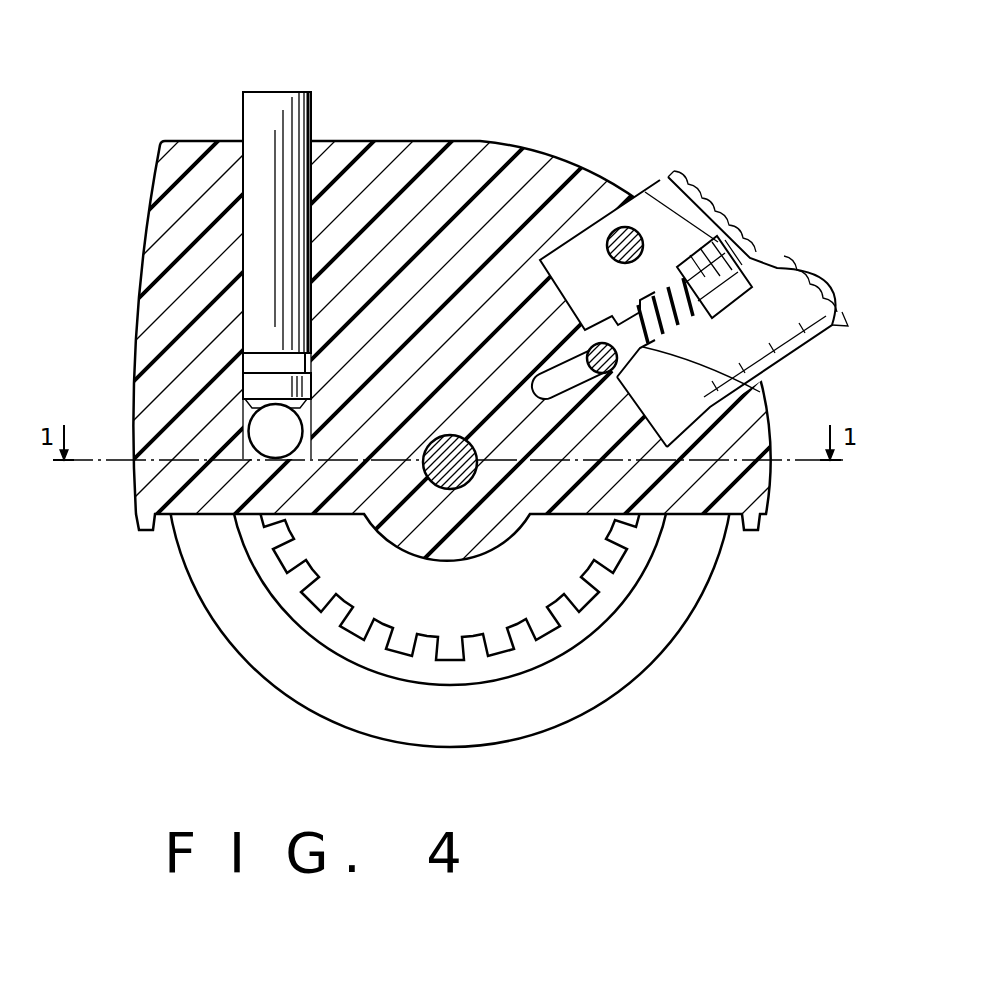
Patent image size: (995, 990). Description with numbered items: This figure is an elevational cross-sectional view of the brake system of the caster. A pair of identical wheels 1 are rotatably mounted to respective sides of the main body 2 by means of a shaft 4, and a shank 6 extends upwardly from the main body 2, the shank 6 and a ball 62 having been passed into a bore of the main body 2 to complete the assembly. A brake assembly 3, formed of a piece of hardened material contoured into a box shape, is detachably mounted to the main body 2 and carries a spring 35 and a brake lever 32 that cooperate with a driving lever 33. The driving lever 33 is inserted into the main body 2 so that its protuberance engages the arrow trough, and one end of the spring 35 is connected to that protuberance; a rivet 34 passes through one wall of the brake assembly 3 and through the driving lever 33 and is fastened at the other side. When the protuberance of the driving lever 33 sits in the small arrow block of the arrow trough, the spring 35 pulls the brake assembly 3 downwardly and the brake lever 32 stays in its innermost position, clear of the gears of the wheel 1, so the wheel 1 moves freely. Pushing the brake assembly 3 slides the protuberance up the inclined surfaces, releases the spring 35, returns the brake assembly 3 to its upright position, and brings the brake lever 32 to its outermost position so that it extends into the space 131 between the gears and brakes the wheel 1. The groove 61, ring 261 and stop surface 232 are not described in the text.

The wheel 1 is at (417, 730).
The space 131 is at (397, 642).
The main body 2 is at (497, 158).
The brake assembly 3 is at (807, 352).
The shaft 4 is at (458, 488).
The shank 6 is at (316, 120).
The groove of locking pin 61 is at (270, 366).
The ring 261 is at (282, 384).
The ball 62 is at (263, 443).
The brake lever 32 is at (603, 372).
The driving lever 33 is at (592, 273).
The rivet 34 is at (630, 233).
The spring 35 is at (727, 253).
The stop surface 232 is at (757, 390).